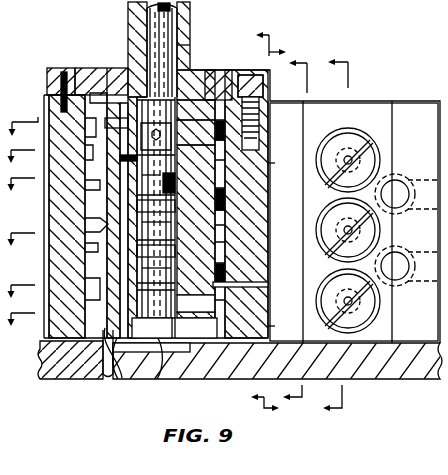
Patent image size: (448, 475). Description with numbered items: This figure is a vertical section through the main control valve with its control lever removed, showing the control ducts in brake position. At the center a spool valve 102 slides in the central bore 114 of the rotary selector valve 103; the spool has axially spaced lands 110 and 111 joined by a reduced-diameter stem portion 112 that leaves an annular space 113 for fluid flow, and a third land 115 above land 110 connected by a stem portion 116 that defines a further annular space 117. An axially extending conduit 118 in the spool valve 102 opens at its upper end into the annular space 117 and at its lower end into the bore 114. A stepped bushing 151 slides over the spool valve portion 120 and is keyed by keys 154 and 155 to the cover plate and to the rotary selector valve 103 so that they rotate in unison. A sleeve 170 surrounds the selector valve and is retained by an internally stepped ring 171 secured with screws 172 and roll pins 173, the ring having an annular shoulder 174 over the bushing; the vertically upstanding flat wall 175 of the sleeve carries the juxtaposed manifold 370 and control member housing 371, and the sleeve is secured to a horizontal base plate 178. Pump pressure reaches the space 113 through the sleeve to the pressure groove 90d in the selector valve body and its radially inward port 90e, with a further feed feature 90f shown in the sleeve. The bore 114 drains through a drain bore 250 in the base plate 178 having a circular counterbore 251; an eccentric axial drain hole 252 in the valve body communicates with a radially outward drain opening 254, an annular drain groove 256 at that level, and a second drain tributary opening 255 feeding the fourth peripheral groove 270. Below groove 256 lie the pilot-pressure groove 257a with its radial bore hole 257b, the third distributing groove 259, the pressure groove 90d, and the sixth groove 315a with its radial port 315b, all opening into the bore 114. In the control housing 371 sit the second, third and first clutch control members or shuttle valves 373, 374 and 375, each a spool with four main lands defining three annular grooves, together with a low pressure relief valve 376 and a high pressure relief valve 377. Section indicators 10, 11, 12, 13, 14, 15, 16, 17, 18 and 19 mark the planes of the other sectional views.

The section line 10 is at (252, 219).
The section line 11 is at (282, 233).
The section line 12 is at (294, 239).
The section line 13 is at (334, 238).
The section line 14 is at (21, 116).
The section line 15 is at (22, 159).
The section line 16 is at (22, 189).
The section line 17 is at (22, 244).
The section line 18 is at (22, 295).
The section line 19 is at (22, 324).
The pressure groove 90d is at (86, 285).
The fluid pressure port 90e is at (208, 272).
The passage 90f is at (262, 286).
The spool valve 102 is at (176, 248).
The rotary selector valve 103 is at (177, 182).
The land 110 is at (178, 163).
The land 111 is at (176, 300).
The stem portion 112 is at (176, 226).
The annular space 113 is at (176, 202).
The central bore 114 is at (177, 88).
The third land 115 is at (178, 113).
The stem portion 116 is at (178, 132).
The annular space 117 is at (126, 140).
The conduit 118 is at (168, 323).
The spool valve portion 120 is at (193, 6).
The stepped bushing 151 is at (191, 44).
The key 154 is at (192, 27).
The key 155 is at (126, 68).
The sleeve 170 is at (258, 228).
The internally stepped ring 171 is at (46, 92).
The screws 172 is at (253, 77).
The roll pins 173 is at (61, 72).
The annular shoulder 174 is at (224, 72).
The flat wall 175 is at (282, 327).
The base plate 178 is at (390, 372).
The drain bore 250 is at (140, 378).
The circular counterbore 251 is at (190, 370).
The drain hole 252 is at (118, 378).
The drain opening 254 is at (100, 90).
The drain tributary opening 255 is at (86, 245).
The annular drain groove 256 is at (85, 131).
The second peripheral groove 257a is at (86, 150).
The bore hole 257b is at (285, 166).
The third peripheral pressure fluid distributing groove 259 is at (86, 183).
The fourth peripheral groove 270 is at (86, 224).
The sixth peripheral groove 315a is at (70, 360).
The radial port 315b is at (175, 322).
The manifold 370 is at (292, 271).
The control member housing 371 is at (393, 101).
The second clutch control member 373 is at (368, 315).
The third clutch control member 374 is at (368, 235).
The first clutch control member 375 is at (368, 155).
The low pressure relief valve 376 is at (399, 282).
The high pressure relief valve 377 is at (428, 188).